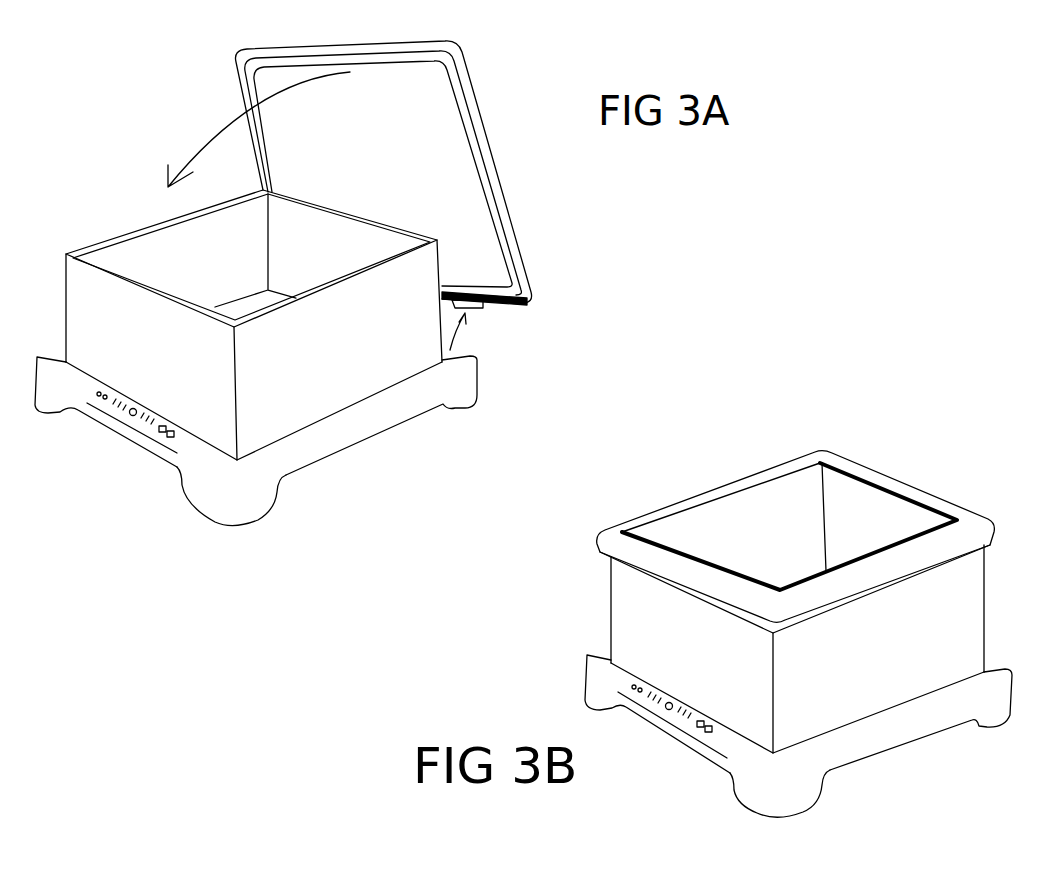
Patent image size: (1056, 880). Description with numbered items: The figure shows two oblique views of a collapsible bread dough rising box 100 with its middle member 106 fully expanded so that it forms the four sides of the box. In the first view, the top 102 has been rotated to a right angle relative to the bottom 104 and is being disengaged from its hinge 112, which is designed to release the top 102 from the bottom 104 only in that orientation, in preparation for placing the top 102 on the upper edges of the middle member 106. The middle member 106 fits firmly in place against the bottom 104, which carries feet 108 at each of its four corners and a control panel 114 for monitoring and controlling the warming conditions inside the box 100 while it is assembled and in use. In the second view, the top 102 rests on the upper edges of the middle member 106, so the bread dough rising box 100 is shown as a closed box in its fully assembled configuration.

In FIG. 3A, the bread dough rising box 100 is at (587, 224).
In FIG. 3B, the bread dough rising box 100 is at (886, 406).
In FIG. 3A, the top 102 is at (502, 173).
In FIG. 3B, the top 102 is at (708, 480).
In FIG. 3A, the bottom 104 is at (350, 443).
In FIG. 3B, the bottom 104 is at (903, 743).
In FIG. 3A, the collapsible middle member 106 is at (127, 233).
In FIG. 3B, the collapsible middle member 106 is at (610, 592).
In FIG. 3A, the feet 108 is at (257, 515).
In FIG. 3B, the feet 108 is at (810, 807).
In FIG. 3A, the disengageable hinge 112 is at (480, 310).
In FIG. 3A, the control panel 114 is at (125, 437).
In FIG. 3B, the control panel 114 is at (658, 730).